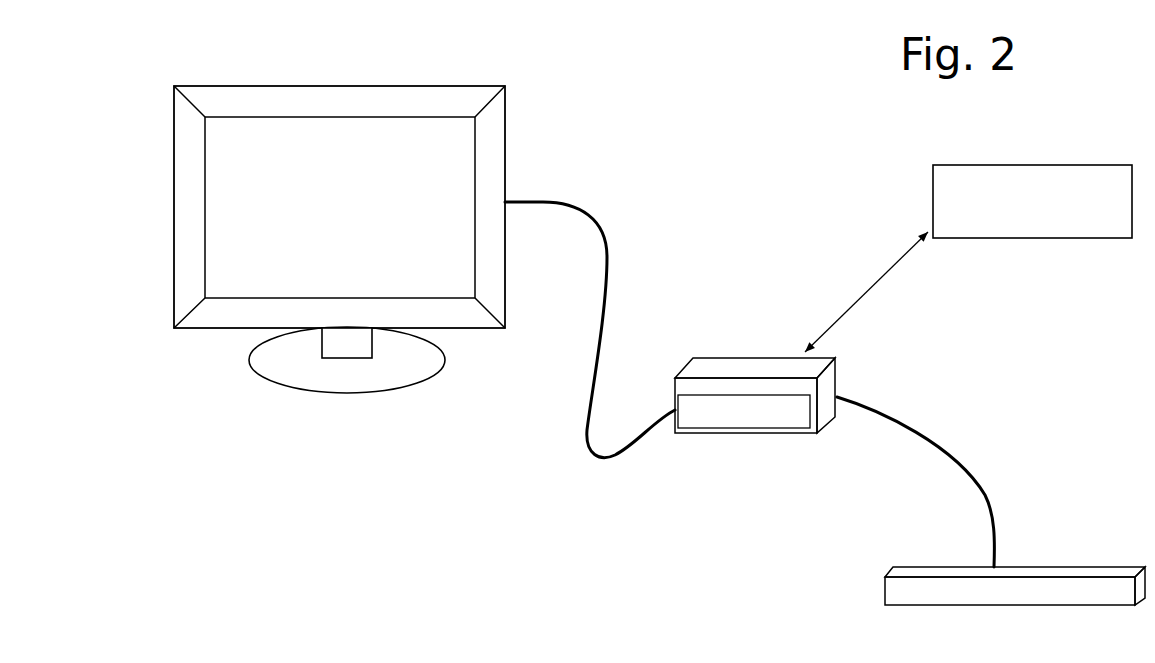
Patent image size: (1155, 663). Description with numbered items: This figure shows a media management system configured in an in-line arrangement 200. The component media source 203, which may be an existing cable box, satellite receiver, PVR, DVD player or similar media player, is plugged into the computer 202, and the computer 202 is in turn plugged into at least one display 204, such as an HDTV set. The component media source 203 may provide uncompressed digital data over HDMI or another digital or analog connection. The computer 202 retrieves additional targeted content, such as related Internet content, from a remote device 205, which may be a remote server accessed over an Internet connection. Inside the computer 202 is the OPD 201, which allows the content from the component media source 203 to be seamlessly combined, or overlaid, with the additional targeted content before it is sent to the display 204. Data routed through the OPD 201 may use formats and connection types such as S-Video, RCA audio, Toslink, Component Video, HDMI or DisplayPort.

The in-line arrangement 200 is at (756, 252).
The OPD 201 is at (755, 395).
The computer 202 is at (755, 369).
The component media source 203 is at (1015, 586).
The display 204 is at (339, 239).
The remote device 205 is at (968, 258).